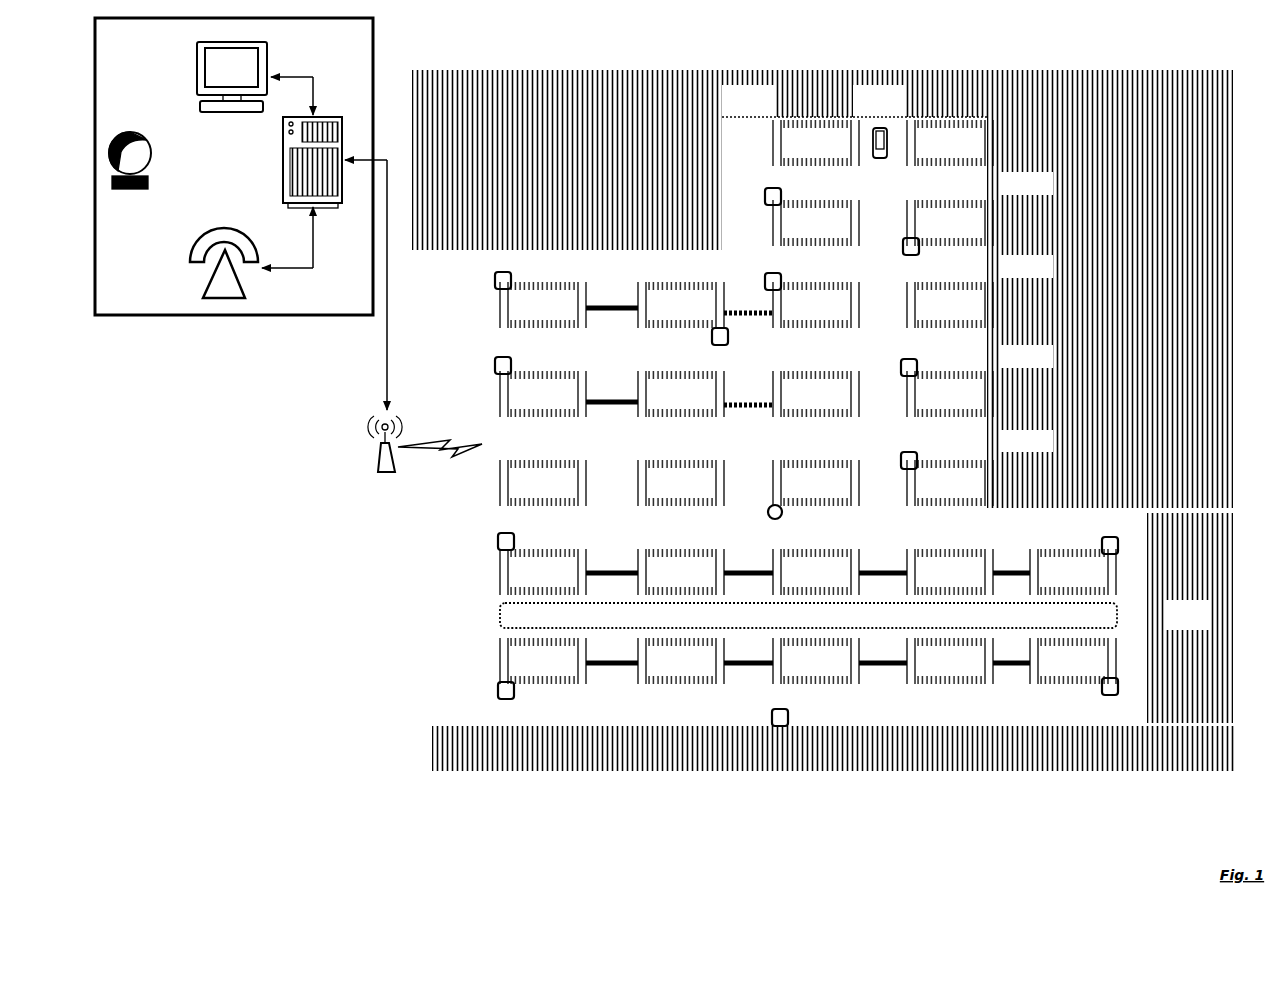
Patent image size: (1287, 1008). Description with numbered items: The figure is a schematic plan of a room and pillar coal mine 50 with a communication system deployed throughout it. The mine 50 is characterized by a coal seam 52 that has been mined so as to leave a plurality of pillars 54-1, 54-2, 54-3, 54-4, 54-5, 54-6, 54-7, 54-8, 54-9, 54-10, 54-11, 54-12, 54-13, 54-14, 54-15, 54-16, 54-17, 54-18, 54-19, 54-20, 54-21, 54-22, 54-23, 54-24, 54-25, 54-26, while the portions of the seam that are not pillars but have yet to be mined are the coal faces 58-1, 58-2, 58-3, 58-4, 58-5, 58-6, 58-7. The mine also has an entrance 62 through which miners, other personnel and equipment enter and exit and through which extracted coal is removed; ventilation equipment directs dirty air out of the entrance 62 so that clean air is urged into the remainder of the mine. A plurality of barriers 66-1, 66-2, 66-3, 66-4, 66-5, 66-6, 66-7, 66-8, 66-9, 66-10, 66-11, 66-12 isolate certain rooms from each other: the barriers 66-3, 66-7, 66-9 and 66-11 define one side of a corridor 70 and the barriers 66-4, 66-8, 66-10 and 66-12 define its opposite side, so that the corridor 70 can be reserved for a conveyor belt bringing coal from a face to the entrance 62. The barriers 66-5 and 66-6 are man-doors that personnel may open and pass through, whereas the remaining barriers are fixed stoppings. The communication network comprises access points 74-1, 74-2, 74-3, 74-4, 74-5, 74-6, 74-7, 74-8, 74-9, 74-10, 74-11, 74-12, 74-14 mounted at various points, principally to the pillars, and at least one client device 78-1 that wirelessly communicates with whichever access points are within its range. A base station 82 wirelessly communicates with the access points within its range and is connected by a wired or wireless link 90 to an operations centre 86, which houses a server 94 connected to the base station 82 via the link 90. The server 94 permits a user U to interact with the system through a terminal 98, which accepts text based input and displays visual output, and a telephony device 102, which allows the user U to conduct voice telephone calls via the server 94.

The room and pillar coal mine 50 is at (1075, 784).
The coal seam 52 is at (428, 743).
The pillar 54-1 is at (543, 305).
The pillar 54-2 is at (543, 394).
The pillar 54-3 is at (543, 483).
The pillar 54-4 is at (543, 572).
The pillar 54-5 is at (543, 661).
The pillar 54-6 is at (681, 305).
The pillar 54-7 is at (681, 394).
The pillar 54-8 is at (681, 483).
The pillar 54-9 is at (681, 572).
The pillar 54-10 is at (681, 661).
The pillar 54-11 is at (816, 143).
The pillar 54-12 is at (816, 223).
The pillar 54-13 is at (816, 305).
The pillar 54-14 is at (816, 394).
The pillar 54-15 is at (816, 483).
The pillar 54-16 is at (816, 572).
The pillar 54-17 is at (816, 661).
The pillar 54-18 is at (950, 143).
The pillar 54-19 is at (950, 223).
The pillar 54-20 is at (950, 305).
The pillar 54-21 is at (950, 394).
The pillar 54-22 is at (950, 483).
The pillar 54-23 is at (950, 572).
The pillar 54-24 is at (950, 661).
The pillar 54-25 is at (1073, 572).
The pillar 54-26 is at (1073, 661).
The coal face 58-1 is at (787, 93).
The coal face 58-2 is at (920, 93).
The coal face 58-3 is at (1110, 142).
The coal face 58-4 is at (1110, 257).
The coal face 58-5 is at (1110, 345).
The coal face 58-6 is at (1110, 449).
The coal face 58-7 is at (1190, 618).
The entrance 62 is at (681, 423).
The barrier 66-1 is at (612, 314).
The barrier 66-2 is at (612, 408).
The barrier 66-3 is at (613, 567).
The barrier 66-4 is at (607, 670).
The barrier 66-5 is at (742, 319).
The barrier 66-6 is at (746, 411).
The barrier 66-7 is at (740, 567).
The barrier 66-8 is at (742, 670).
The barrier 66-9 is at (880, 567).
The barrier 66-10 is at (873, 670).
The barrier 66-11 is at (1000, 567).
The barrier 66-12 is at (1003, 670).
The corridor 70 is at (808, 615).
The access point 74-1 is at (492, 281).
The access point 74-2 is at (492, 366).
The access point 74-3 is at (495, 543).
The access point 74-4 is at (495, 690).
The access point 74-5 is at (763, 197).
The access point 74-6 is at (763, 282).
The access point 74-7 is at (717, 348).
The access point 74-8 is at (784, 522).
The access point 74-9 is at (791, 706).
The access point 74-10 is at (901, 250).
The access point 74-11 is at (899, 372).
The access point 74-12 is at (899, 465).
The access point 74-14 is at (1100, 545).
The client device 78-1 is at (885, 162).
The base station 82 is at (397, 479).
The operations centre 86 is at (234, 206).
The link 90 is at (393, 328).
The server 94 is at (281, 160).
The terminal 98 is at (232, 77).
The telephony device 102 is at (224, 263).
The user U is at (137, 192).